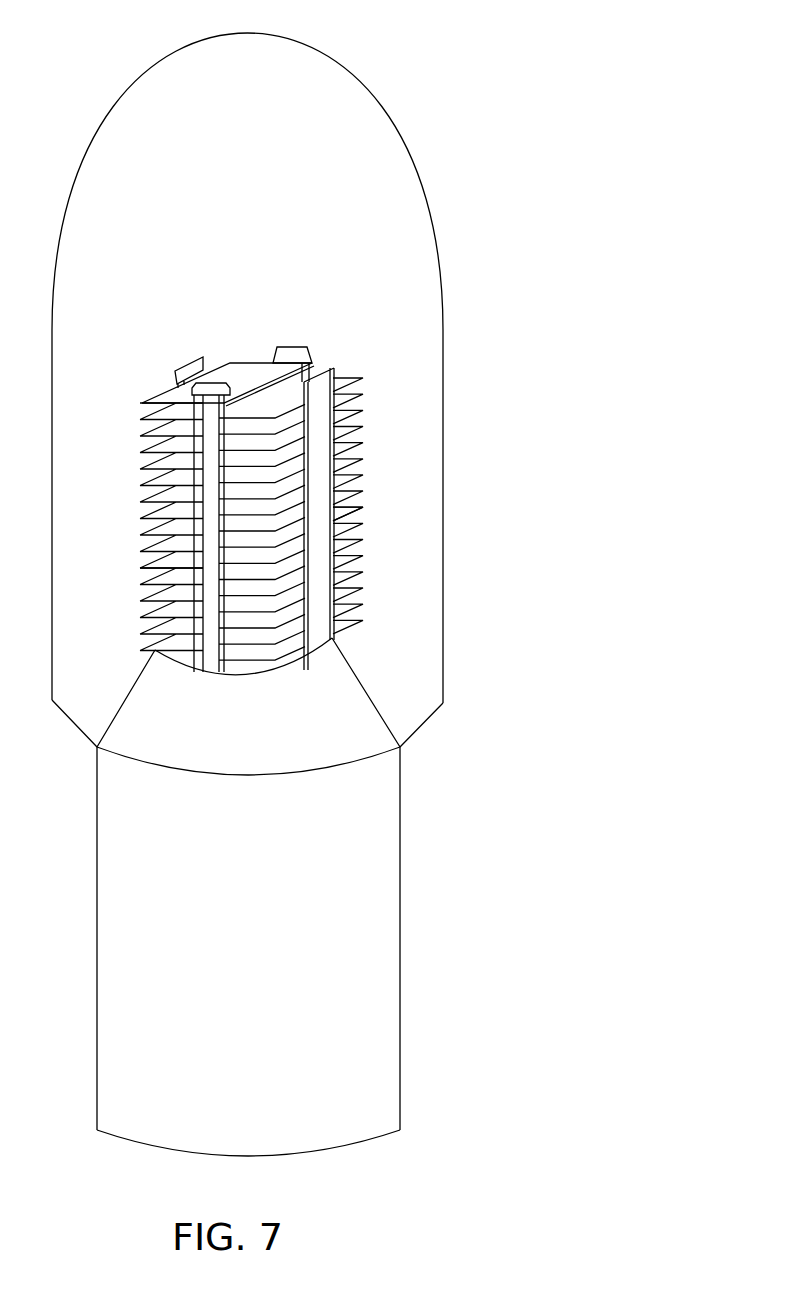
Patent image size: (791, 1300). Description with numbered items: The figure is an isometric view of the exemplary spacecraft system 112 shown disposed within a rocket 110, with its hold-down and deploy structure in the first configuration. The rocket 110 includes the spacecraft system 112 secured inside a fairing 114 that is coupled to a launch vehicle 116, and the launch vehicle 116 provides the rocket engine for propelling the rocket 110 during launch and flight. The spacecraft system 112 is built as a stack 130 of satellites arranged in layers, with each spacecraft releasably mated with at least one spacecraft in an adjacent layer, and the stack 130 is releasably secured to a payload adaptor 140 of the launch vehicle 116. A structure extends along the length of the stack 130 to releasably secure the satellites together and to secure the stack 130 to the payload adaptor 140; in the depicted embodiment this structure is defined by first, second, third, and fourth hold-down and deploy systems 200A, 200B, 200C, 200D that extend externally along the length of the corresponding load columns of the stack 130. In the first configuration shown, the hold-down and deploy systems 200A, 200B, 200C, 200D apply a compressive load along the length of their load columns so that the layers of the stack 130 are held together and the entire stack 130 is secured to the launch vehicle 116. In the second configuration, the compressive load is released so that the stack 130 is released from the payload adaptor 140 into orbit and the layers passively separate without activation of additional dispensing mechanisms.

The rocket 110 is at (296, 583).
The fairing 114 is at (395, 140).
The spacecraft system 112 is at (292, 460).
The stack 130 is at (240, 350).
The first hold-down and deploy system 200A is at (315, 345).
The second hold-down and deploy system 200B is at (190, 560).
The third hold-down and deploy system 200C is at (183, 358).
The fourth hold-down and deploy system 200D is at (335, 513).
The payload adaptor 140 is at (337, 717).
The launch vehicle 116 is at (400, 922).